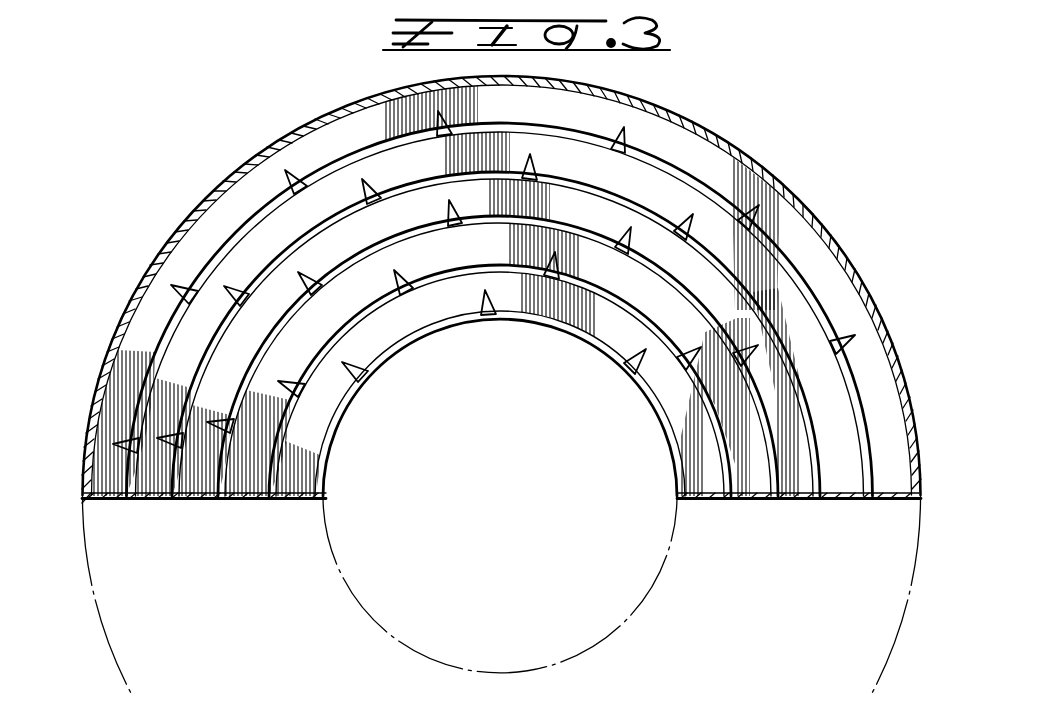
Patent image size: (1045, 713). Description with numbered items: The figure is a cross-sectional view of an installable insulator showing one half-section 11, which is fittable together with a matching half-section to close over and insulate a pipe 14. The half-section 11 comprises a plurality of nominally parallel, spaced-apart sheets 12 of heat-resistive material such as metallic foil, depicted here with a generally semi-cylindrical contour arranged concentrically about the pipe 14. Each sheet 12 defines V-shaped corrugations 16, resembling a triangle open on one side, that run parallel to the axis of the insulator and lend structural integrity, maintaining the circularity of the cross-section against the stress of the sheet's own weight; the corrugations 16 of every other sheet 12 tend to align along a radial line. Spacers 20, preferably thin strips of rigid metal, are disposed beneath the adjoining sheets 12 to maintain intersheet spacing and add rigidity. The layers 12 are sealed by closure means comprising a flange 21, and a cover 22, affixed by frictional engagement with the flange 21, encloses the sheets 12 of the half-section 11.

The half-section 11 is at (803, 187).
The sheet 12 is at (292, 251).
The pipe 14 is at (658, 580).
The corrugation 16 is at (188, 305).
The spacer 20 is at (777, 291).
The flange 21 is at (225, 500).
The cover 22 is at (723, 140).